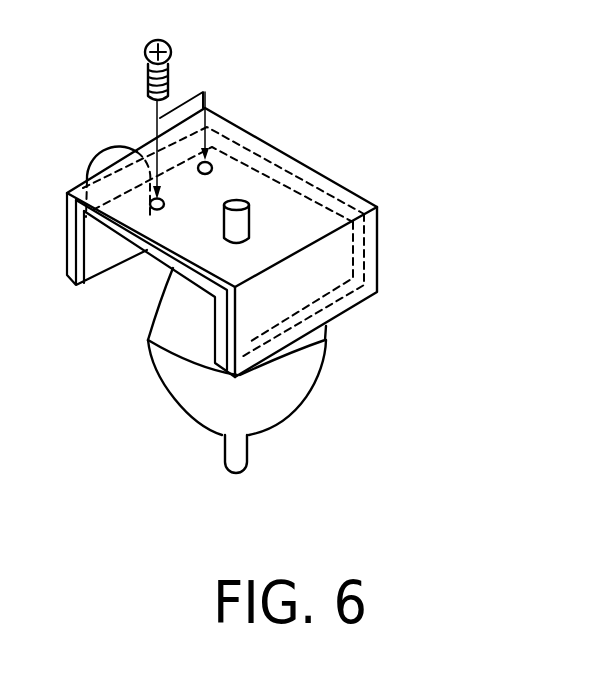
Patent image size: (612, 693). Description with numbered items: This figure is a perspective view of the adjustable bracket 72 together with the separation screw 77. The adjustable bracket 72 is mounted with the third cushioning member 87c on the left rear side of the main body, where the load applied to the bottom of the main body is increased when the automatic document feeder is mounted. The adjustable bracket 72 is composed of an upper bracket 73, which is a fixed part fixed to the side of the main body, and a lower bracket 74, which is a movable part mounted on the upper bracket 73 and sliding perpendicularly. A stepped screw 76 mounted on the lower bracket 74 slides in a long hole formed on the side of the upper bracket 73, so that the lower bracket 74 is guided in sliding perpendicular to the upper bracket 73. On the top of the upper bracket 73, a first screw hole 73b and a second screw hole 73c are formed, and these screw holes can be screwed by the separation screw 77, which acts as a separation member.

The adjustable bracket 72 is at (452, 196).
The upper bracket 73 is at (323, 172).
The first screw hole 73b is at (213, 163).
The second screw hole 73c is at (138, 260).
The lower bracket 74 is at (355, 252).
The stepped screw 76 is at (98, 172).
The separation screw 77 is at (171, 52).
The third cushioning member 87c is at (172, 396).